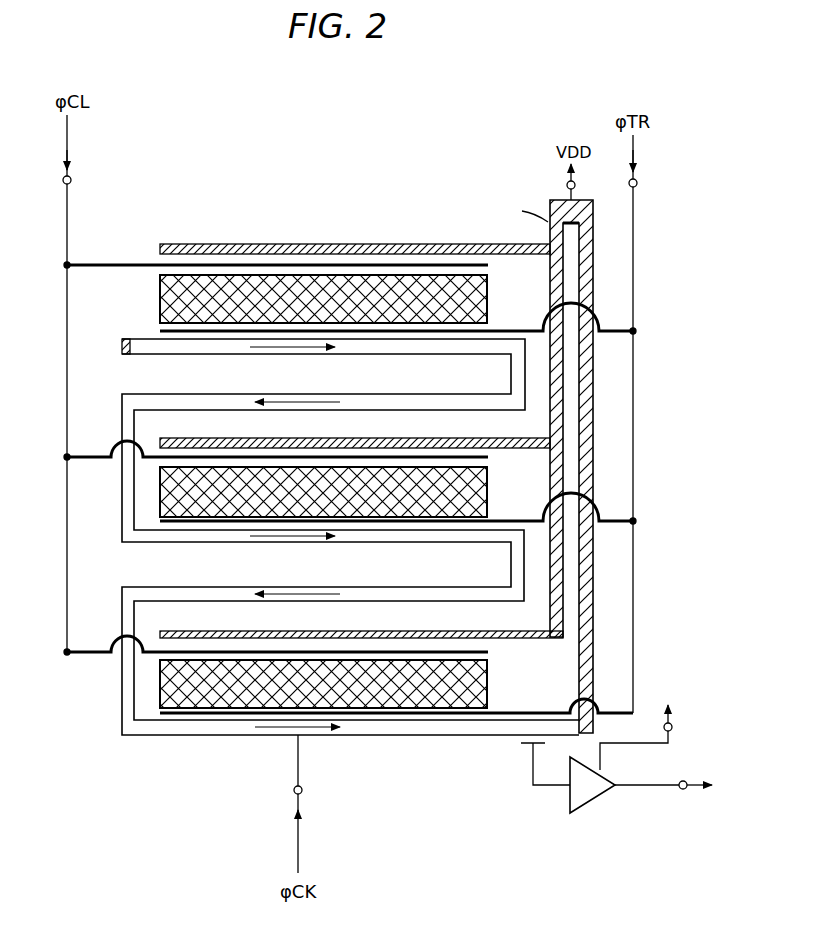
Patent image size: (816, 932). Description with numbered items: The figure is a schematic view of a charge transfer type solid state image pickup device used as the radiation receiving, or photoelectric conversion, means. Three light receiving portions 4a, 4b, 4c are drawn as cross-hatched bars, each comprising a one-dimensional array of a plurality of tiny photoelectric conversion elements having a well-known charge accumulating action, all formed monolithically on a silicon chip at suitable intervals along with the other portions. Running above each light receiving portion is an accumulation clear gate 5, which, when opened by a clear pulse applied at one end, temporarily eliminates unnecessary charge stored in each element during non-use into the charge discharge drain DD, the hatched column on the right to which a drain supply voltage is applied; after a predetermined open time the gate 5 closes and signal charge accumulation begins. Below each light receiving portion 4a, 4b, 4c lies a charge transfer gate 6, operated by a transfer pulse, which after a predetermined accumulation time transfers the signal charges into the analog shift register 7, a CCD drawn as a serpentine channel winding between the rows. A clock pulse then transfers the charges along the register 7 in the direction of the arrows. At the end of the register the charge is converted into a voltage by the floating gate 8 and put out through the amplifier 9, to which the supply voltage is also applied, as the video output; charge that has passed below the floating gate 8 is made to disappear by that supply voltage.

The light receiving portion 4a is at (489, 689).
The light receiving portion 4b is at (489, 488).
The light receiving portion 4c is at (489, 297).
The accumulation clear gate 5 is at (102, 267).
The charge transfer gate 6 is at (225, 334).
The analog shift register 7 is at (518, 370).
The floating gate 8 is at (528, 752).
The amplifier 9 is at (598, 800).
The charge discharge drain DD is at (540, 465).